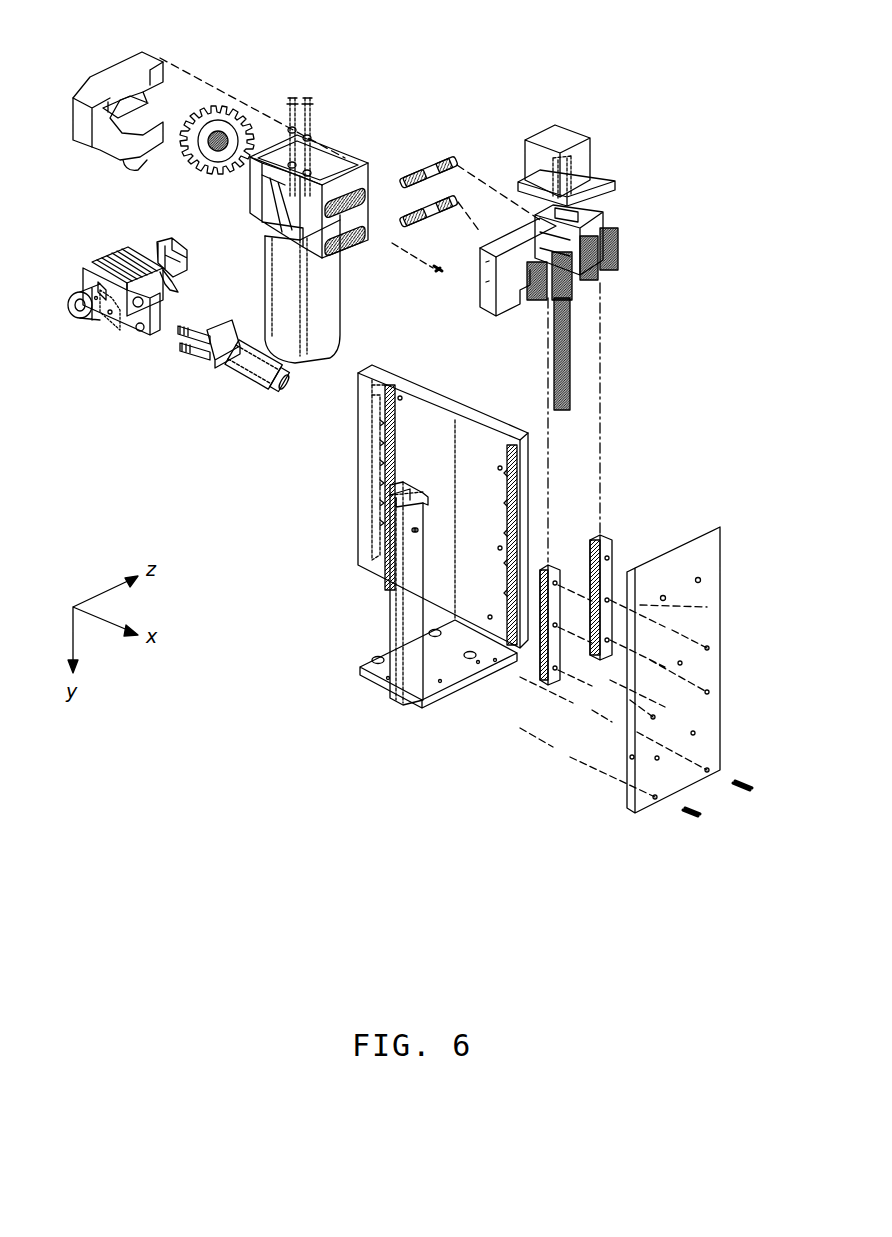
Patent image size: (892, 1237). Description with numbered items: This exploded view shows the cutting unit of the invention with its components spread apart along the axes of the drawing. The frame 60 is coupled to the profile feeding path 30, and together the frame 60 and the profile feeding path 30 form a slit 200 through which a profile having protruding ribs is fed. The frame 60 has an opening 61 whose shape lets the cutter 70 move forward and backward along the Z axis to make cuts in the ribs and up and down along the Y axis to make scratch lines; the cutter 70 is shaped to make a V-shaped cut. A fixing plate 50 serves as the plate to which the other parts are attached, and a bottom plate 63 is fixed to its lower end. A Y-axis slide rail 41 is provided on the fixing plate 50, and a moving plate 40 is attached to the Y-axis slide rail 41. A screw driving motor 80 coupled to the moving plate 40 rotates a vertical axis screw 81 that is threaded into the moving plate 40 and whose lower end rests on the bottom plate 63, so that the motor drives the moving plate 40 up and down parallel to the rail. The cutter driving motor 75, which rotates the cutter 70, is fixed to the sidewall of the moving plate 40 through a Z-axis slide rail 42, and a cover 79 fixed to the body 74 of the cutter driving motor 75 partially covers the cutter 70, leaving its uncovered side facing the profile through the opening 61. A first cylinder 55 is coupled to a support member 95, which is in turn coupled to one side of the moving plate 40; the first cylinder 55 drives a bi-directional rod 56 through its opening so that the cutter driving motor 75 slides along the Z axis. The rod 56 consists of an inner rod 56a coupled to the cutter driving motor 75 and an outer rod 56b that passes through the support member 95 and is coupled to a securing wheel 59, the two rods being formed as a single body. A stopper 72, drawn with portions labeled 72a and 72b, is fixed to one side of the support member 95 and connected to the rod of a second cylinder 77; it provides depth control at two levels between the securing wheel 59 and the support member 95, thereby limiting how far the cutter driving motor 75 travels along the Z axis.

The cover 79 is at (118, 66).
The cutter 70 is at (236, 104).
The body 74 is at (325, 150).
The cutter driving motor 75 is at (335, 300).
The Z-axis slide rail 42 is at (425, 163).
The moving plate 40 is at (488, 284).
The screw driving motor 80 is at (595, 137).
The vertical axis screw 81 is at (576, 340).
The first cylinder 55 is at (106, 248).
The inner rod 56a is at (182, 262).
The bi-directional rod 56 is at (168, 272).
The outer rod 56b is at (100, 286).
The securing wheel 59 is at (68, 306).
The support member 95 is at (118, 316).
The stopper 72 is at (195, 365).
The upper prong 72a is at (190, 338).
The lower prong 72b is at (203, 360).
The second cylinder 77 is at (277, 378).
The profile feeding path 30 is at (448, 398).
The opening 61 is at (380, 497).
The frame 60 is at (430, 588).
The bottom plate 63 is at (458, 670).
The slit 200 is at (522, 598).
The Y-axis slide rail 41 is at (608, 546).
The fixing plate 50 is at (713, 710).